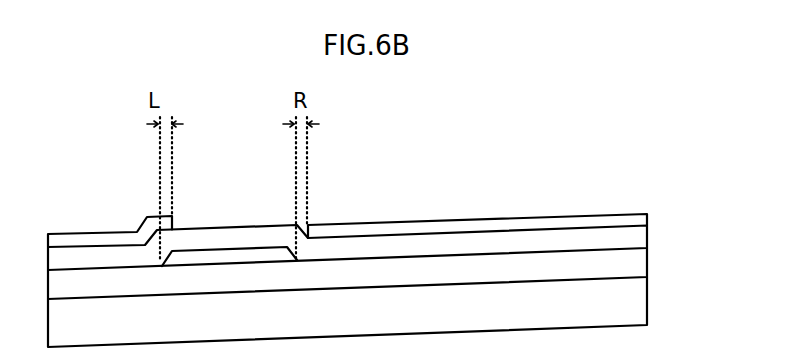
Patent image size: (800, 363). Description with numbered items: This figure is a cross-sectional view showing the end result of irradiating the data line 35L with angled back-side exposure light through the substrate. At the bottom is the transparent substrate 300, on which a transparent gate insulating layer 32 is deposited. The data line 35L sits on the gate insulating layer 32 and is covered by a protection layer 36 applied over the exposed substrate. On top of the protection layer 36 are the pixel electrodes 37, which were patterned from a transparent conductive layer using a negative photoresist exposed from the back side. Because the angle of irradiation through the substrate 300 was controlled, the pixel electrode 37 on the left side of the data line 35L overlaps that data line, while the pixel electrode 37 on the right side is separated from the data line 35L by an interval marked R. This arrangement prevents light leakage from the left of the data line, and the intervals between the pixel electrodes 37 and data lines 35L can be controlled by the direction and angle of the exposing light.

The transparent substrate 300 is at (623, 306).
The gate insulating layer 32 is at (627, 262).
The protection layer 36 is at (647, 236).
The pixel electrodes 37 is at (90, 238).
The data line 35L is at (232, 257).